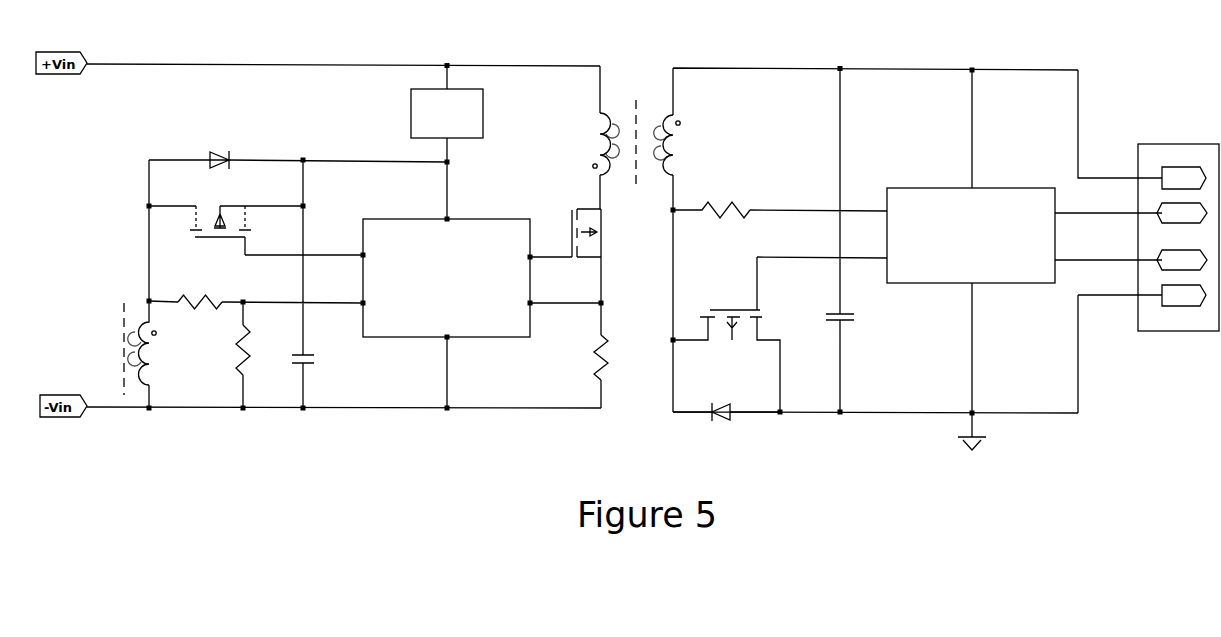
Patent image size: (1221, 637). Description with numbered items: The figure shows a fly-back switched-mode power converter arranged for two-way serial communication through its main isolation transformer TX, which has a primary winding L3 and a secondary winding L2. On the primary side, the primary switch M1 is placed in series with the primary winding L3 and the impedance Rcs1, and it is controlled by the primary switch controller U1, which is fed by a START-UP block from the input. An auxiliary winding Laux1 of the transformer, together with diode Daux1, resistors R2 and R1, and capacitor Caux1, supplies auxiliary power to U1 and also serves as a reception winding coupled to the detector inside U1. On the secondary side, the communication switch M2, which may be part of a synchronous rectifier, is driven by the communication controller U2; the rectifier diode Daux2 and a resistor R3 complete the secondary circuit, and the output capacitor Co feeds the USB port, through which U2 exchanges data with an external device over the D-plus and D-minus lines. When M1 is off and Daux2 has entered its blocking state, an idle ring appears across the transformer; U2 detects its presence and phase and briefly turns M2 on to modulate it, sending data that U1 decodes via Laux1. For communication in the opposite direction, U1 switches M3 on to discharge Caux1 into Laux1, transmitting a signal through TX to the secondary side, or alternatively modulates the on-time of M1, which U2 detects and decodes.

The auxiliary diode 1 Daux1 is at (218, 150).
The switch M3 is at (220, 220).
The resistor R2 is at (200, 292).
The resistor R1 is at (227, 350).
The reception winding Laux1 is at (172, 342).
The capacitor Caux1 is at (332, 362).
The isolation transformer TX is at (377, 228).
The start-up circuit START-UP is at (449, 113).
The primary switch controller U1 is at (446, 267).
The primary winding L3 is at (592, 144).
The primary switch M1 is at (600, 233).
The impedance Rcs1 is at (623, 357).
The secondary winding L2 is at (682, 145).
The resistor R3 is at (711, 190).
The communication controller U2 is at (971, 222).
The communication switch M2 is at (731, 310).
The rectifier diode Daux2 is at (726, 394).
The output capacitor Co is at (852, 320).
The USB port USB is at (1178, 222).